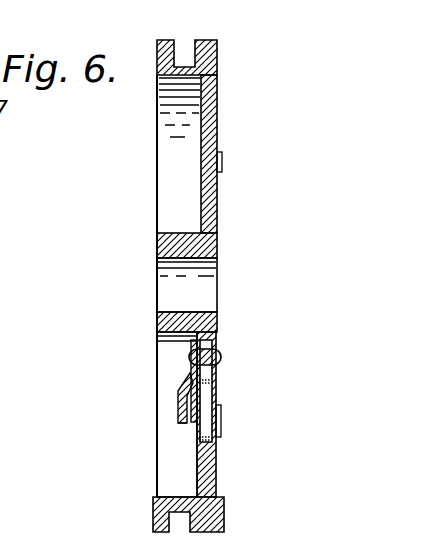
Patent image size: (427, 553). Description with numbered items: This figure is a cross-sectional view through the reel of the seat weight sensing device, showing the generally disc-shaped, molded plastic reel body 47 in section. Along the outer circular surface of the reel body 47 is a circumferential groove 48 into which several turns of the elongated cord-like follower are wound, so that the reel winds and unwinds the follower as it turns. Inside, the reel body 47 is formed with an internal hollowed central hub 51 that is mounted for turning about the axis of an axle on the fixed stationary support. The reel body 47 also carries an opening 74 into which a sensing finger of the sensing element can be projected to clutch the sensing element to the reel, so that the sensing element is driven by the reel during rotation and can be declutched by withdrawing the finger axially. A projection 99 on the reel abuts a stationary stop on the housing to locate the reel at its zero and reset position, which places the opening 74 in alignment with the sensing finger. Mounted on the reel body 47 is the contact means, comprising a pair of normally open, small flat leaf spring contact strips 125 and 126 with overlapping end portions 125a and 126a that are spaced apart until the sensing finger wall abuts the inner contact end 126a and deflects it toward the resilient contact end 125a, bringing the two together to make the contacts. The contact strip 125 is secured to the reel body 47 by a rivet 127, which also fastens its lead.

The circumferential groove 48 is at (187, 52).
The reel body 47 is at (203, 213).
The hollowed central hub 51 is at (203, 309).
The rivet 127 is at (217, 351).
The leaf spring contact strip 126 is at (205, 388).
The overlapping end portion 126a is at (197, 421).
The leaf spring contact strip 125 is at (178, 386).
The overlapping end portion 125a is at (178, 425).
The opening 74 is at (200, 436).
The projection 99 is at (218, 519).